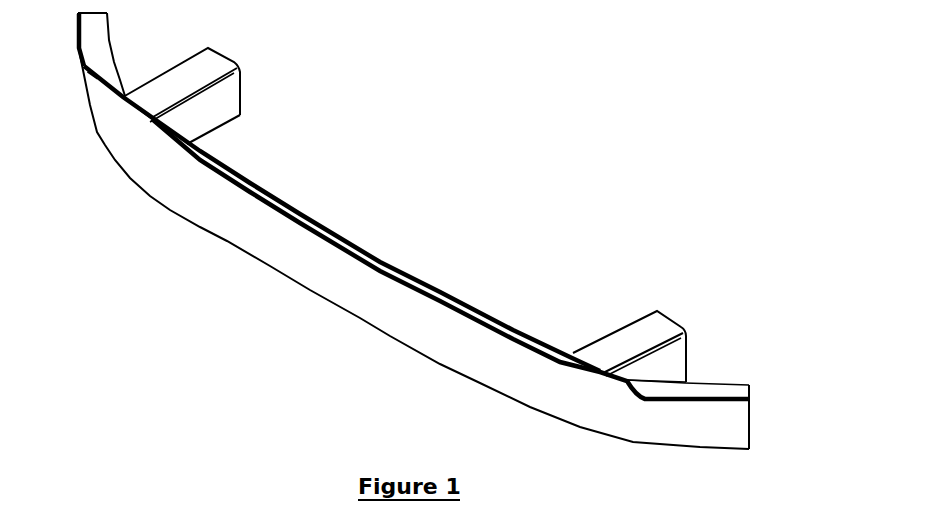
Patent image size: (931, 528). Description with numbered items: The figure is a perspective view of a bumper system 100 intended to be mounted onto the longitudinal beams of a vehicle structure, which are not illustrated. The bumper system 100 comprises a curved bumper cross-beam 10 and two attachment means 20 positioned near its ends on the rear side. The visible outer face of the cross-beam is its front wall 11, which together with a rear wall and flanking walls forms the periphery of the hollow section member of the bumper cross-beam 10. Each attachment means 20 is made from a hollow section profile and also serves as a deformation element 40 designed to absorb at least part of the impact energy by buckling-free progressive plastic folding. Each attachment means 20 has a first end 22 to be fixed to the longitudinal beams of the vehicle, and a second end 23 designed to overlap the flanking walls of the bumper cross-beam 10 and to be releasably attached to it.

The bumper system 100 is at (489, 206).
The bumper cross-beam 10 is at (280, 253).
The front wall 11 is at (370, 317).
The attachment means 20 is at (453, 191).
The deformation element 40 is at (234, 36).
The first end 22 is at (242, 115).
The second end 23 is at (142, 112).